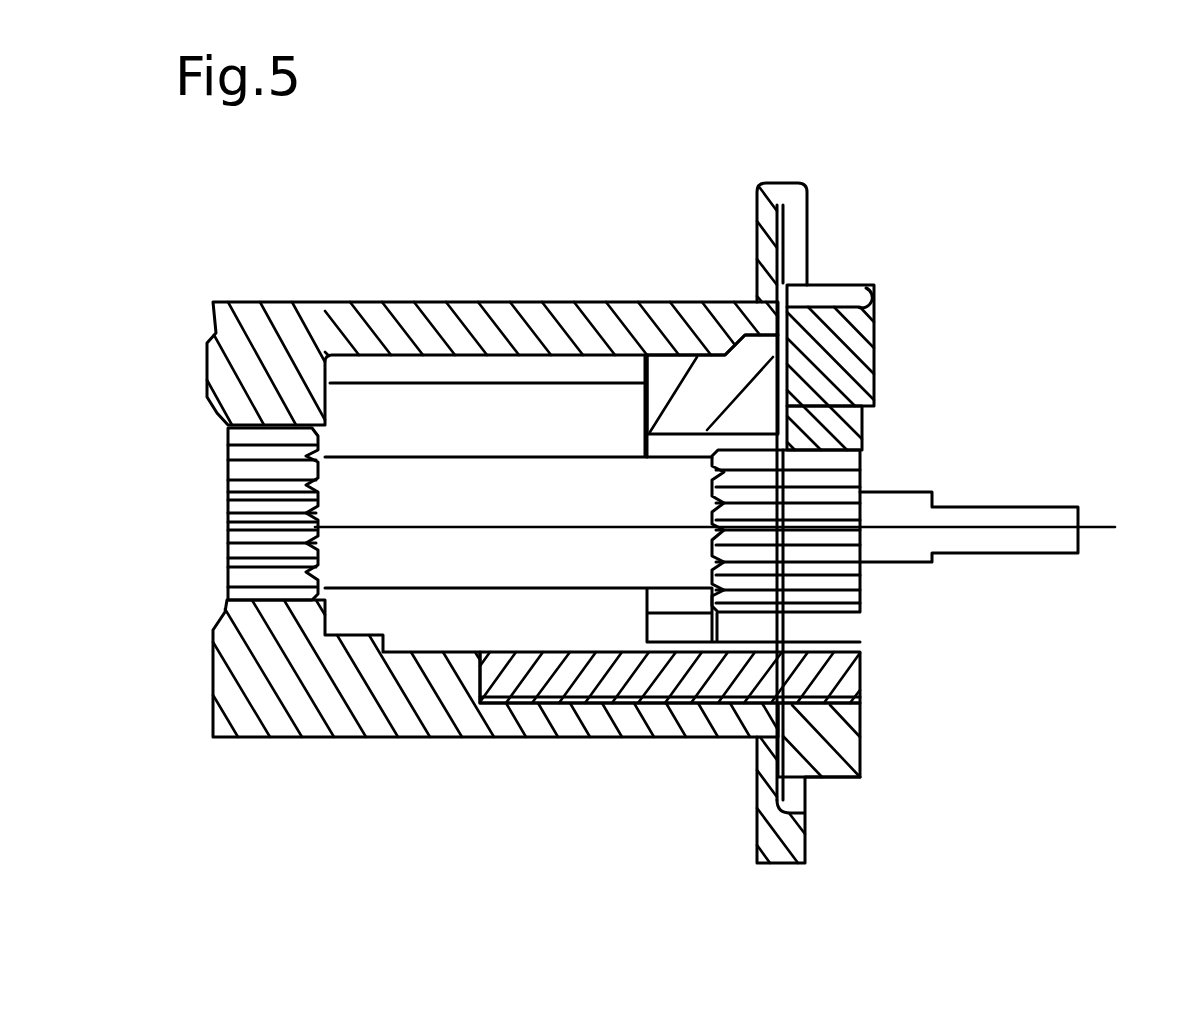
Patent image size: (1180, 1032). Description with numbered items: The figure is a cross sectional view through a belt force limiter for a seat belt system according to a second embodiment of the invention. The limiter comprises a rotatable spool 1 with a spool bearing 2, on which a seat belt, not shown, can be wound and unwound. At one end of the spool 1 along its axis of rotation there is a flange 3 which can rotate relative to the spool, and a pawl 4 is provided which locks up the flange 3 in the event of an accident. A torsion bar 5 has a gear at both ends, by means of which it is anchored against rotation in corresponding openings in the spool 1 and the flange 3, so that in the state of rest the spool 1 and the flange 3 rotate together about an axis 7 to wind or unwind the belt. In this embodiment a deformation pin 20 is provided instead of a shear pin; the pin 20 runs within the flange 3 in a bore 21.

The spool 1 is at (440, 318).
The spool bearing 2 is at (697, 393).
The flange 3 is at (815, 420).
The pawl 4 is at (873, 365).
The torsion bar 5 is at (915, 510).
The axis 7 is at (1108, 531).
The deformation pin 20 is at (690, 698).
The bore 21 is at (860, 722).